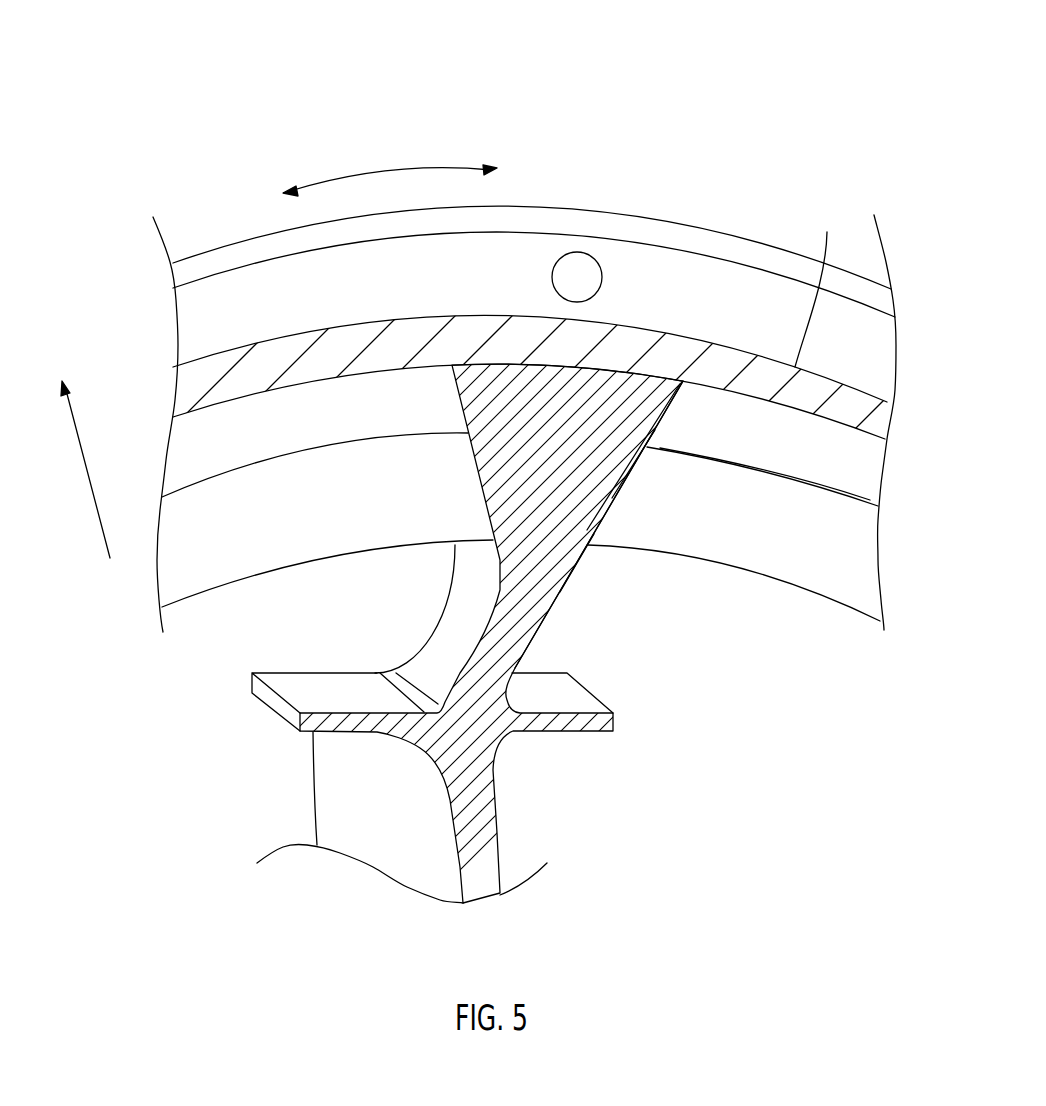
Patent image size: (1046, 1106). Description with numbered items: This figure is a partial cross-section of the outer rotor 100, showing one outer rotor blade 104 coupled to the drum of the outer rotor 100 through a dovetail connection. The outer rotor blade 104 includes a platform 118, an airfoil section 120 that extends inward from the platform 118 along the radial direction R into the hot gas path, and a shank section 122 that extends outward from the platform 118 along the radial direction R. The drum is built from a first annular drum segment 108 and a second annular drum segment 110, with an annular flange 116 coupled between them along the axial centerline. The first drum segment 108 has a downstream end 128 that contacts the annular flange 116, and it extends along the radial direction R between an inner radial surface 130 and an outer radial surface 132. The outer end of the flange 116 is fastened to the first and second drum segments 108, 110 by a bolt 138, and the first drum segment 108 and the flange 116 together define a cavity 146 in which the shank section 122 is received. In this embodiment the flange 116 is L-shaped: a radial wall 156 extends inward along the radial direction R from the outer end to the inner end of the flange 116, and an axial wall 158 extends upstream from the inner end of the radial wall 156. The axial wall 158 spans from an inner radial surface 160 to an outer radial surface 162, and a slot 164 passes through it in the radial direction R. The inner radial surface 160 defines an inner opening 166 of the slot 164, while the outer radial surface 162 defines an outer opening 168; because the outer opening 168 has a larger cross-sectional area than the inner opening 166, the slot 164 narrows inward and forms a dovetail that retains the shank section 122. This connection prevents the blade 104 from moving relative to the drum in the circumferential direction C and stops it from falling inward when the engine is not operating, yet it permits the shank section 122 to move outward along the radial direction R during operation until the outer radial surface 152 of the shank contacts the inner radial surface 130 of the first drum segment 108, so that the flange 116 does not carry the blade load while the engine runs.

The outer rotor 100 is at (200, 88).
The outer rotor blade 104 is at (590, 805).
The first annular drum segment 108 is at (177, 397).
The second annular drum segment 110 is at (690, 235).
The annular flange 116 is at (200, 447).
The platform 118 is at (268, 701).
The airfoil section 120 is at (342, 807).
The shank section 122 is at (523, 625).
The downstream end 128 is at (316, 322).
The inner radial surface 130 is at (382, 371).
The outer radial surface 132 is at (820, 282).
The bolt 138 is at (578, 262).
The cavity 146 is at (443, 418).
The outer radial surface of the shank portion 152 is at (587, 367).
The radial wall 156 is at (865, 483).
The axial wall 158 is at (345, 538).
The inner radial surface 160 is at (793, 588).
The outer radial surface 162 is at (812, 492).
The slot 164 is at (643, 497).
The inner opening 166 is at (597, 565).
The outer opening 168 is at (663, 438).
The circumferential direction C is at (388, 172).
The radial direction R is at (83, 472).